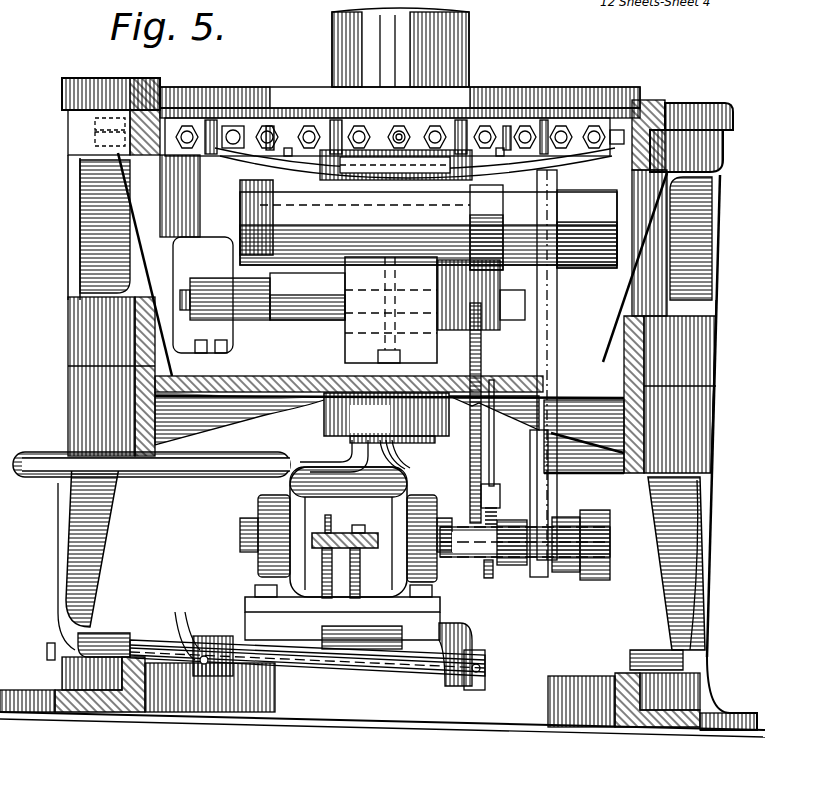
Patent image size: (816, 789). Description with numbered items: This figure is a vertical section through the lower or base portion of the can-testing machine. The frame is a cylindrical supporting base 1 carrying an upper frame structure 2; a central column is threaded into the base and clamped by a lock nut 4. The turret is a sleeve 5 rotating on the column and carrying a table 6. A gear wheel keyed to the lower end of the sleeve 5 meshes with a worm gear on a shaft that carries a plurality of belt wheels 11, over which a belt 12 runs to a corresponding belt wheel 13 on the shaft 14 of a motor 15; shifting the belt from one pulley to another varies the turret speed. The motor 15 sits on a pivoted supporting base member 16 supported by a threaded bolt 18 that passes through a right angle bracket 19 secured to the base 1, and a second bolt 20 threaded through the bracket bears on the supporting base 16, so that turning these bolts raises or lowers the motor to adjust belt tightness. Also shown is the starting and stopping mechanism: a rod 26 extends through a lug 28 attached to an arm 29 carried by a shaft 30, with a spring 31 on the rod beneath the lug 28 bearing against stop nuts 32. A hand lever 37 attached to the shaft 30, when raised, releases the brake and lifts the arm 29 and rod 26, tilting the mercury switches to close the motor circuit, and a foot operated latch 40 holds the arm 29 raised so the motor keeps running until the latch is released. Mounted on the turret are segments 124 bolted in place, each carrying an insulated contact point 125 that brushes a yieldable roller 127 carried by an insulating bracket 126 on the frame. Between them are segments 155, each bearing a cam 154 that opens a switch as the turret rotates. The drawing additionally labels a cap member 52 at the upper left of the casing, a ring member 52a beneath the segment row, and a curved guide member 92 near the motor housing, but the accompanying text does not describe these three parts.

The cylindrical supporting base 1 is at (697, 438).
The upper frame structure 2 is at (697, 342).
The lock nut 4 is at (386, 418).
The sleeve 5 is at (400, 47).
The table 6 is at (575, 52).
The belt wheels 11 is at (572, 204).
The belt 12 is at (550, 292).
The belt wheel 13 is at (583, 568).
The shaft 14 is at (525, 503).
The motor 15 is at (318, 496).
The supporting base member 16 is at (263, 626).
The threaded bolt 18 is at (354, 620).
The right angle bracket 19 is at (346, 535).
The bolt 20 is at (300, 565).
The rod 26 is at (511, 433).
The lug 28 is at (500, 493).
The arm 29 is at (470, 456).
The shaft 30 is at (316, 302).
The spring 31 is at (500, 512).
The stop nuts 32 is at (491, 575).
The hand lever 37 is at (196, 251).
The foot operated latch 40 is at (466, 617).
The top cap 52 is at (110, 78).
The ring 52a is at (298, 166).
The curved guide 92 is at (399, 470).
The segment 124 is at (228, 128).
The contact point 125 is at (190, 126).
The bracket 126 is at (78, 143).
The roller 127 is at (78, 124).
The cam 154 is at (288, 150).
The segments 155 is at (272, 126).